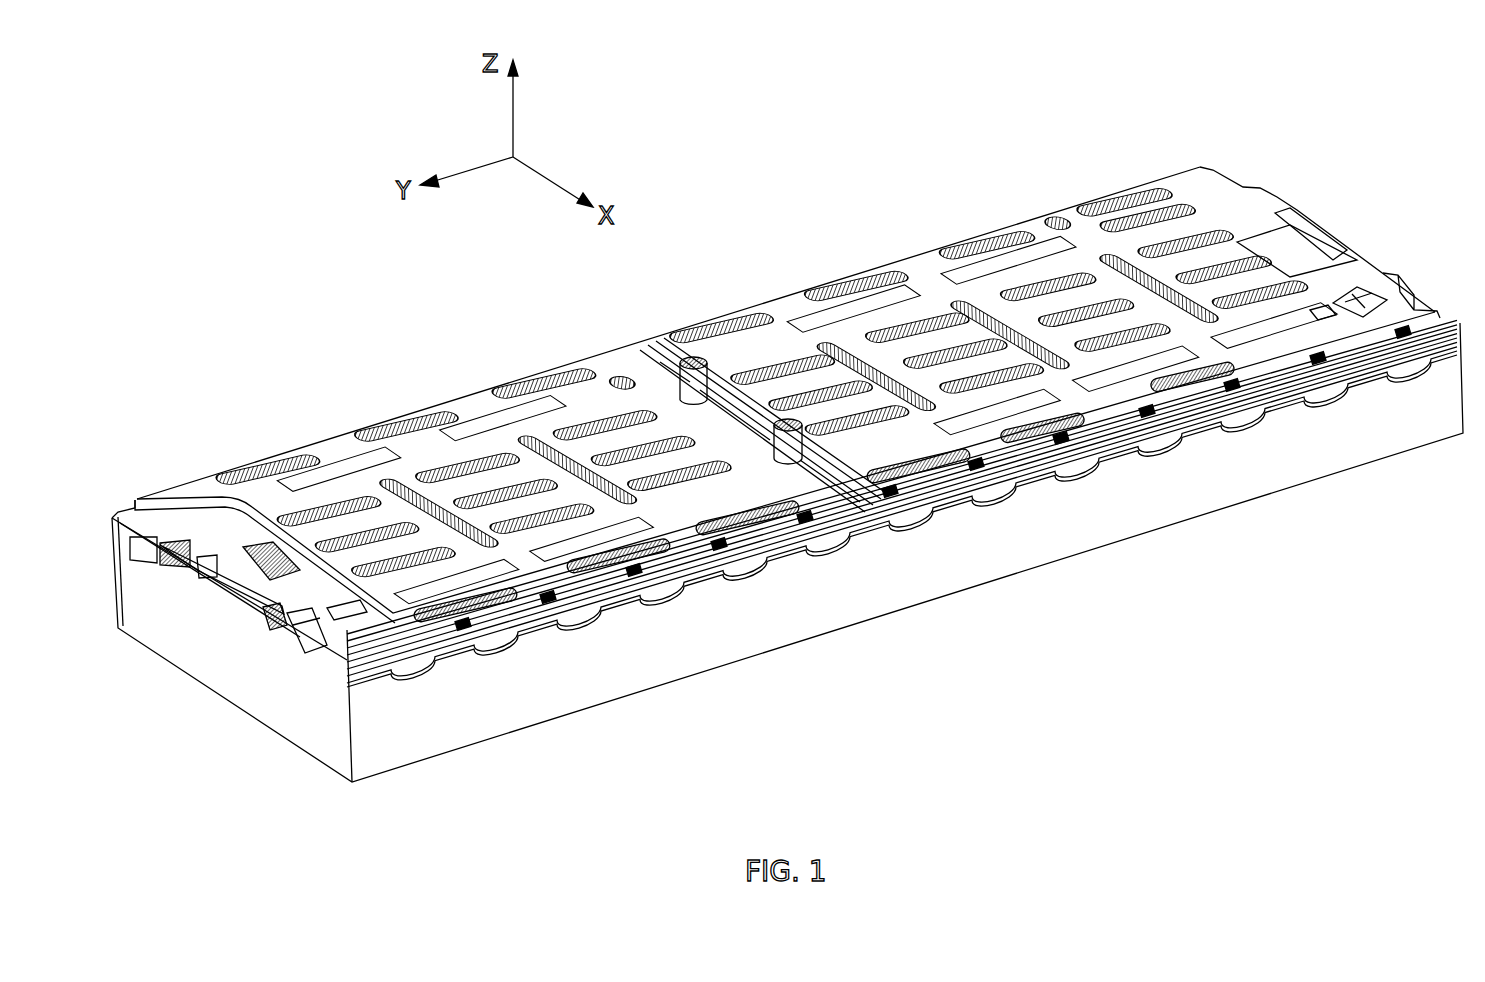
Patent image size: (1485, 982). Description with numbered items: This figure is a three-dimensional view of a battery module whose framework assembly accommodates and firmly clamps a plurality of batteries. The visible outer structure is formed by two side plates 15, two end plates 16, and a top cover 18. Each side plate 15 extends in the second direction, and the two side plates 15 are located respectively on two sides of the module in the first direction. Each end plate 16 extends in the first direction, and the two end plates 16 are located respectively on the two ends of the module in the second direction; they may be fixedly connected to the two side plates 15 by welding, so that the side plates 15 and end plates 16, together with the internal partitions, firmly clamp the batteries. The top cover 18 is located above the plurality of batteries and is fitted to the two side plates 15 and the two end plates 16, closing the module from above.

The side plate 15 is at (893, 578).
The end plate 16 is at (215, 670).
The top cover 18 is at (930, 280).